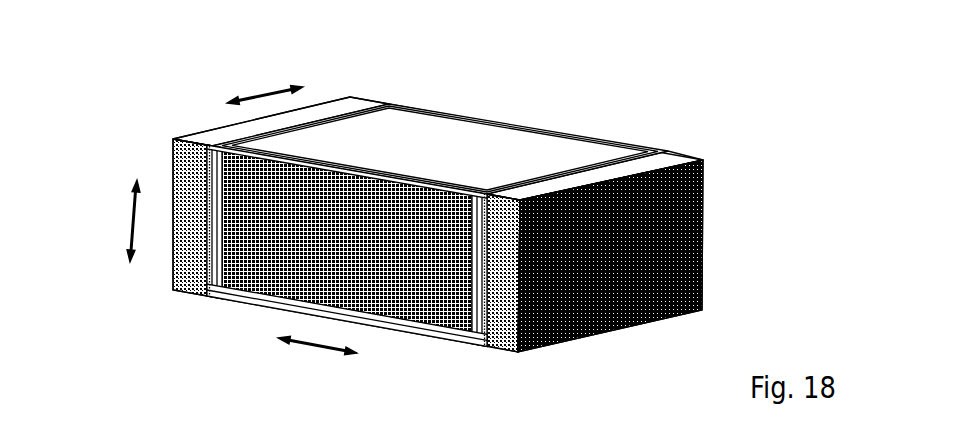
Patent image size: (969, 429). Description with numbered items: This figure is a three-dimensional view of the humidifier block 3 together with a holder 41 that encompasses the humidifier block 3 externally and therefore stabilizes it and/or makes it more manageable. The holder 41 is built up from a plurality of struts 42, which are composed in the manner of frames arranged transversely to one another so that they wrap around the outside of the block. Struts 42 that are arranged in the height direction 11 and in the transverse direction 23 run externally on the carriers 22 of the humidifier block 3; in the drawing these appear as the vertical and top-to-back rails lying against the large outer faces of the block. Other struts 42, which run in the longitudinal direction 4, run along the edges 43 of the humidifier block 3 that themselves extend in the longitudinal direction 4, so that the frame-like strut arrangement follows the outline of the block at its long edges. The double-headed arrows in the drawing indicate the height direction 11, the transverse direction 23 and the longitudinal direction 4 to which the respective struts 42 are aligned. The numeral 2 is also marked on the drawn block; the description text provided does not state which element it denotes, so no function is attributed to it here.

The battery cell housing 2 is at (703, 223).
The humidifier block 3 is at (439, 218).
The longitudinal direction 4 is at (313, 347).
The height direction 11 is at (125, 225).
The carriers 22 is at (204, 261).
The transverse direction 23 is at (262, 92).
The holder 41 is at (391, 218).
The struts 42 is at (357, 110).
The edges 43 is at (185, 137).